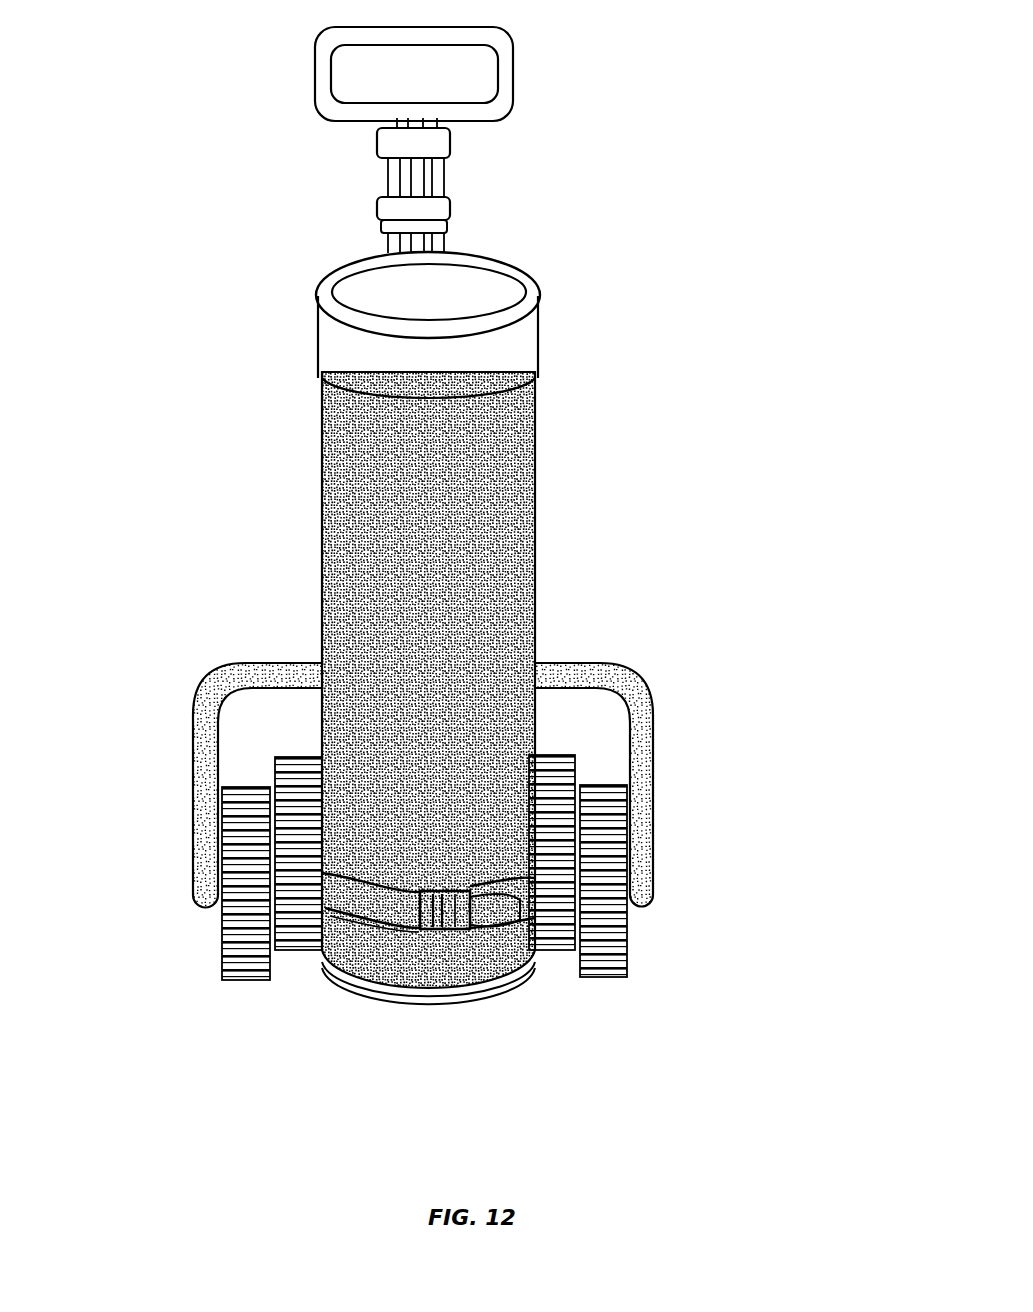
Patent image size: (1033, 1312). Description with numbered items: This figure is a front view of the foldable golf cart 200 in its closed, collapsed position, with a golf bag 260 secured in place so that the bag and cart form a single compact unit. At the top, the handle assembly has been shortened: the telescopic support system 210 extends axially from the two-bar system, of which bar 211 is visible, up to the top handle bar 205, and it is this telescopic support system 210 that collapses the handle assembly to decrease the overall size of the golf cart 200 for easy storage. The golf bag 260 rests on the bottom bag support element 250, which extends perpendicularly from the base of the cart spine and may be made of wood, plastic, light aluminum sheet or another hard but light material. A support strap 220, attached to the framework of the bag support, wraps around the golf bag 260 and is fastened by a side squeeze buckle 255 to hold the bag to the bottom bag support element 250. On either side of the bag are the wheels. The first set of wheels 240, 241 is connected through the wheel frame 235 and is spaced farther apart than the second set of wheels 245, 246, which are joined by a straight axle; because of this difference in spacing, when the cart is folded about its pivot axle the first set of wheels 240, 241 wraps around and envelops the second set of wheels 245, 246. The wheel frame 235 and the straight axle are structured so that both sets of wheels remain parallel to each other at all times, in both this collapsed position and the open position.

The foldable golf cart 200 is at (746, 240).
The top handle bar 205 is at (504, 77).
The telescopic support system 210 is at (433, 140).
The two-bar system bar 211 is at (440, 232).
The support strap 220 is at (385, 935).
The wheel frame 235 is at (207, 762).
The first set wheel 240 is at (605, 955).
The first set wheel 241 is at (248, 955).
The second set wheel 245 is at (310, 935).
The second set wheel 246 is at (548, 918).
The bottom bag support element 250 is at (408, 1003).
The side squeeze buckle 255 is at (455, 930).
The golf bag 260 is at (365, 565).